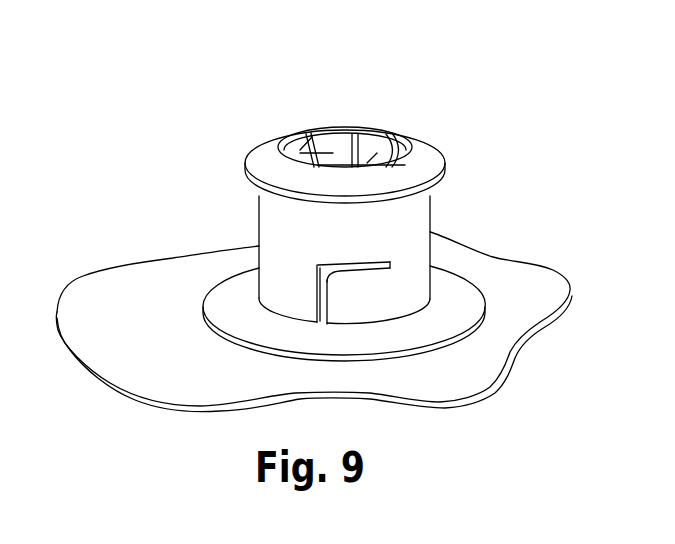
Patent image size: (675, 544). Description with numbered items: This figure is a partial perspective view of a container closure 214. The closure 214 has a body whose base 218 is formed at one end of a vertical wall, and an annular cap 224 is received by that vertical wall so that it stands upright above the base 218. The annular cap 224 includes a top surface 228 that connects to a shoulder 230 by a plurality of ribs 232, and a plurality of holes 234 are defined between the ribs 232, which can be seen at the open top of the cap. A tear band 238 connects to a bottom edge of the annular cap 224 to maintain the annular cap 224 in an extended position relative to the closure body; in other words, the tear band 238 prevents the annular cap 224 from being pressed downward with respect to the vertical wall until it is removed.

The closure 214 is at (515, 172).
The base 218 is at (460, 300).
The annular cap 224 is at (272, 222).
The top surface 228 is at (283, 137).
The shoulder 230 is at (268, 165).
The ribs 232 is at (354, 133).
The holes 234 is at (382, 135).
The tear band 238 is at (373, 293).